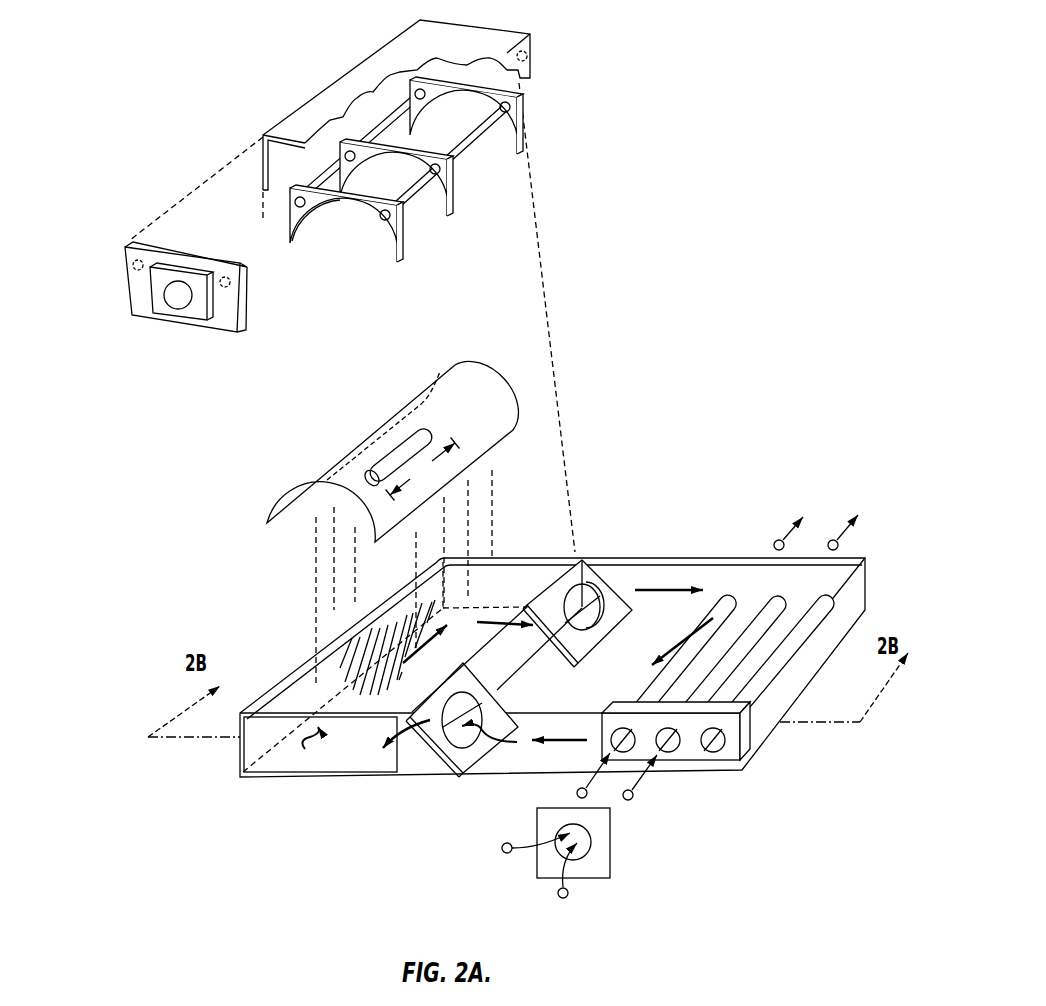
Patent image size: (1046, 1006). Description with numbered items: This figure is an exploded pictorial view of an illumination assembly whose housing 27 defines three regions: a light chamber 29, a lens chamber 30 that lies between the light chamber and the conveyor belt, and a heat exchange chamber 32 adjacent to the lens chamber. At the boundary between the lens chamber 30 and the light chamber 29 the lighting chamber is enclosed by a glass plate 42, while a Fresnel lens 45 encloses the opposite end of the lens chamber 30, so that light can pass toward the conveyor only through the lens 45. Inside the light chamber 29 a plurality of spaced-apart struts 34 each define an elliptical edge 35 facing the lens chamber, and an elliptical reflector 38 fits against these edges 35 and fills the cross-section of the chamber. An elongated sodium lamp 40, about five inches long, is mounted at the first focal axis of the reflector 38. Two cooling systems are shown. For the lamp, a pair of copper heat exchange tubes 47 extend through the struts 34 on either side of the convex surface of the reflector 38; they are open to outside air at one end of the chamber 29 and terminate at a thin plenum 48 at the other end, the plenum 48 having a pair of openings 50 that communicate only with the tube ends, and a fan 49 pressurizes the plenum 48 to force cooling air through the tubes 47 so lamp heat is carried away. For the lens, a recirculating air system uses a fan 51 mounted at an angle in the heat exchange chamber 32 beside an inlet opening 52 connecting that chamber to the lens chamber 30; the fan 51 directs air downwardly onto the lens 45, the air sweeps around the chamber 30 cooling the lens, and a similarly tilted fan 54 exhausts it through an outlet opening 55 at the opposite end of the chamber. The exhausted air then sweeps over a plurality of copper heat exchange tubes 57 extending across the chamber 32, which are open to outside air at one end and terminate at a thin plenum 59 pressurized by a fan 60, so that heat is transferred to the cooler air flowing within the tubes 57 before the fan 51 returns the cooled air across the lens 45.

The housing 27 is at (670, 558).
The light chamber 29 is at (262, 165).
The lens chamber 30 is at (536, 583).
The heat exchange chamber 32 is at (721, 580).
The struts 34 is at (400, 240).
The elliptical edge 35 is at (330, 207).
The elliptical reflector 38 is at (303, 478).
The sodium lamp 40 is at (402, 450).
The glass plate 42 is at (330, 658).
The Fresnel lens 45 is at (330, 772).
The heat exchange tubes 47 is at (460, 167).
The plenum 48 is at (247, 300).
The fan 49 is at (200, 313).
The openings 50 is at (135, 266).
The fan 51 is at (460, 758).
The inlet opening 52 is at (423, 757).
The fan 54 is at (581, 560).
The outlet opening 55 is at (545, 630).
The heat exchange tubes 57 is at (767, 620).
The plenum 59 is at (750, 732).
The fan 60 is at (598, 822).